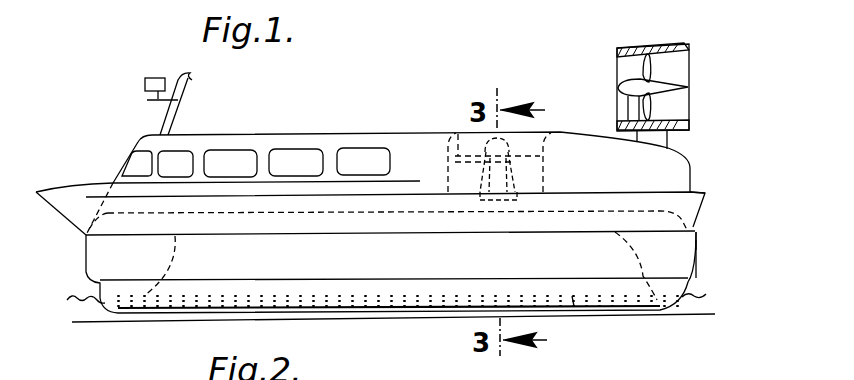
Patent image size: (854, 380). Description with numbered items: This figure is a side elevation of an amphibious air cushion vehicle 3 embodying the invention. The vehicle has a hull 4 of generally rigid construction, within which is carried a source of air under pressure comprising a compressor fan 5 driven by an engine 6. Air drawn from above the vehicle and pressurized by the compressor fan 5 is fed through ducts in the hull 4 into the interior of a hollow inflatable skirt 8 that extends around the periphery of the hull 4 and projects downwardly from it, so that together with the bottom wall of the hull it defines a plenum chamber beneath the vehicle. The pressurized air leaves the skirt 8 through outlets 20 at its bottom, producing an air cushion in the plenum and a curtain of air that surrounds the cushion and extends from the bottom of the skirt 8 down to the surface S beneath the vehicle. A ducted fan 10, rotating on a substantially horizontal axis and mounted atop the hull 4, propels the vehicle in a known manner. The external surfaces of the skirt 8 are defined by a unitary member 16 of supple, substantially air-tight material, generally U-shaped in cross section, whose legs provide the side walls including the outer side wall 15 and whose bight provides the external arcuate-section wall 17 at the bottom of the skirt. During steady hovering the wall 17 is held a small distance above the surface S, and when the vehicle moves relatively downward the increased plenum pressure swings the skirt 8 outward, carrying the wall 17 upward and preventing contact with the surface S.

In FIG. 1, the amphibious air cushion vehicle 3 is at (104, 146).
In FIG. 1, the hull 4 is at (83, 185).
In FIG. 1, the compressor fan 5 is at (460, 132).
In FIG. 1, the engine 6 is at (511, 175).
In FIG. 1, the inflatable skirt 8 is at (105, 259).
In FIG. 1, the ducted fan 10 is at (645, 66).
In FIG. 1, the outer side wall 15 is at (697, 262).
In FIG. 1, the unitary member 16 is at (704, 244).
In FIG. 2, the unitary member 16 is at (665, 376).
In FIG. 1, the external arcuate-section wall 17 is at (572, 306).
In FIG. 1, the outlets 20 is at (192, 306).
In FIG. 1, the surface S is at (705, 312).